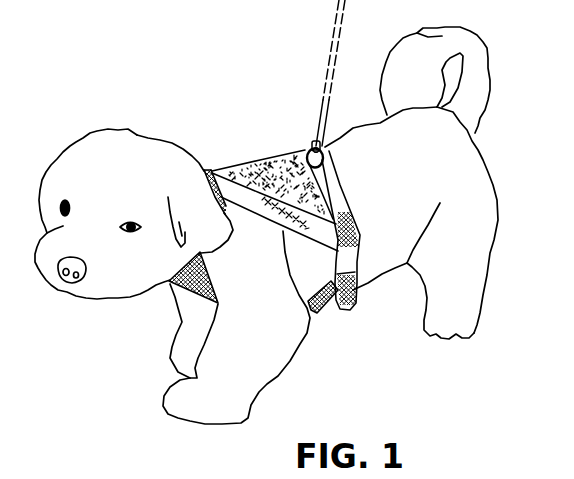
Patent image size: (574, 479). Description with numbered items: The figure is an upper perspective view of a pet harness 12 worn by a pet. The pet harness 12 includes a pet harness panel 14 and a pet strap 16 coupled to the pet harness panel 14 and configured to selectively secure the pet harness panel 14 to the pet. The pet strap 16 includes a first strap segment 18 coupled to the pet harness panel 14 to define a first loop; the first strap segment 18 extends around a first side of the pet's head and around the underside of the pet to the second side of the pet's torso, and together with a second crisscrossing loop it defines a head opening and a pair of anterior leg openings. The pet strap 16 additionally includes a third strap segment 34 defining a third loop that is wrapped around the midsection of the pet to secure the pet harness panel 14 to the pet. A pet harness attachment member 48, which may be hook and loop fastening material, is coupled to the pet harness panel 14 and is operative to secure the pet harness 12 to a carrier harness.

The pet harness 12 is at (252, 157).
The pet harness panel 14 is at (288, 150).
The pet strap 16 is at (350, 323).
The first strap segment 18 is at (323, 313).
The third strap segment 34 is at (348, 285).
The pet harness attachment member 48 is at (261, 138).